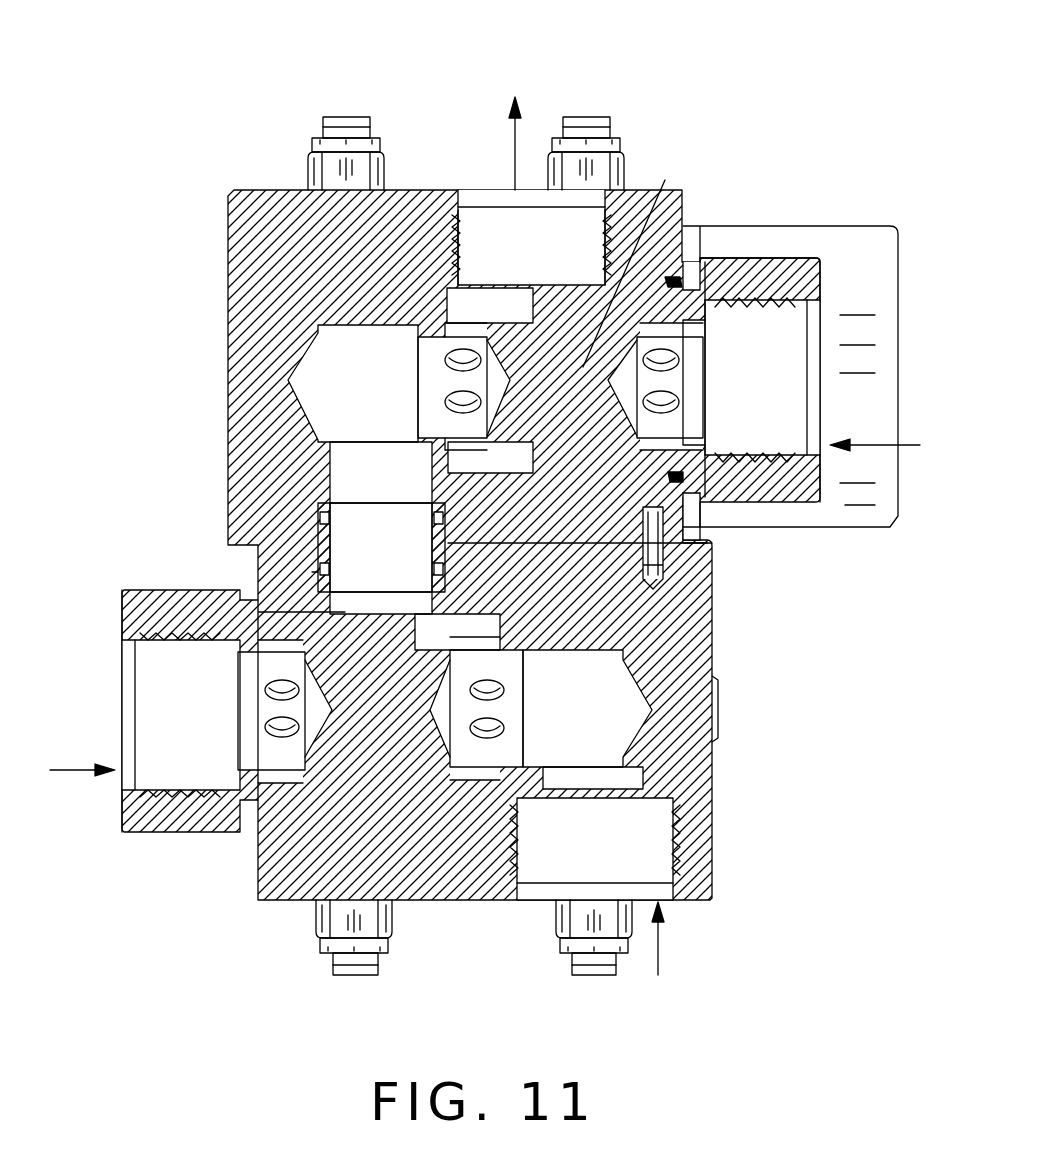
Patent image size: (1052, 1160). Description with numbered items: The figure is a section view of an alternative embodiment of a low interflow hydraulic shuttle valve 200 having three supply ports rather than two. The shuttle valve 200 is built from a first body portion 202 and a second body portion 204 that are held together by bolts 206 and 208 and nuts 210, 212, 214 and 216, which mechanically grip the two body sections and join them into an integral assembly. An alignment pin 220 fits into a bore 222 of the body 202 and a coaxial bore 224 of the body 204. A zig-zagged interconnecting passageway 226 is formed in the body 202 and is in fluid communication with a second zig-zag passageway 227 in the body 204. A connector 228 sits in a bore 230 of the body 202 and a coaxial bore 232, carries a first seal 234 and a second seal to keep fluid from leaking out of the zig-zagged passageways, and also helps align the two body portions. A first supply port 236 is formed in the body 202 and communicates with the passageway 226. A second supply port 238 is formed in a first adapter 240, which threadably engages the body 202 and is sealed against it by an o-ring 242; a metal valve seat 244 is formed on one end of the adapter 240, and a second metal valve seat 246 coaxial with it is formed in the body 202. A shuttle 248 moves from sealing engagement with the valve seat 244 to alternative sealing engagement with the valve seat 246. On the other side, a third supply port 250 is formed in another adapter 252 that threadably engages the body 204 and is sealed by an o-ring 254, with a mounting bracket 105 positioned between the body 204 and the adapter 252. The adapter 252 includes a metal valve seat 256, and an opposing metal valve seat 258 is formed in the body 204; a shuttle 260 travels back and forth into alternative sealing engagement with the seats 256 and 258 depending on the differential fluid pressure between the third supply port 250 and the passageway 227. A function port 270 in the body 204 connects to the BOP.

The shuttle valve 200 is at (218, 68).
The first body portion 202 is at (695, 765).
The second body portion 204 is at (252, 236).
The bolt 206 is at (320, 127).
The bolt 208 is at (610, 127).
The nut 210 is at (316, 165).
The nut 212 is at (616, 165).
The nut 214 is at (322, 920).
The nut 216 is at (562, 922).
The alignment pin 220 is at (705, 548).
The bore 222 is at (663, 575).
The coaxial bore 224 is at (690, 530).
The zig-zagged interconnecting passageway 226 is at (405, 600).
The second zig-zag passageway 227 is at (340, 378).
The connector 228 is at (318, 545).
The bore 230 is at (318, 572).
The coaxial bore 232 is at (330, 505).
The first seal 234 is at (318, 512).
The first supply port 236 is at (447, 573).
The second supply port 238 is at (170, 655).
The first adapter 240 is at (138, 815).
The o-ring 242 is at (240, 645).
The metal valve seat 244 is at (277, 793).
The second metal valve seat 246 is at (492, 790).
The shuttle 248 is at (283, 775).
The third supply port 250 is at (757, 303).
The adapter 252 is at (783, 275).
The o-ring 254 is at (695, 275).
The metal valve seat 256 is at (825, 478).
The opposing metal valve seat 258 is at (447, 300).
The shuttle 260 is at (665, 180).
The function port 270 is at (472, 238).
The mounting bracket 105 is at (865, 247).